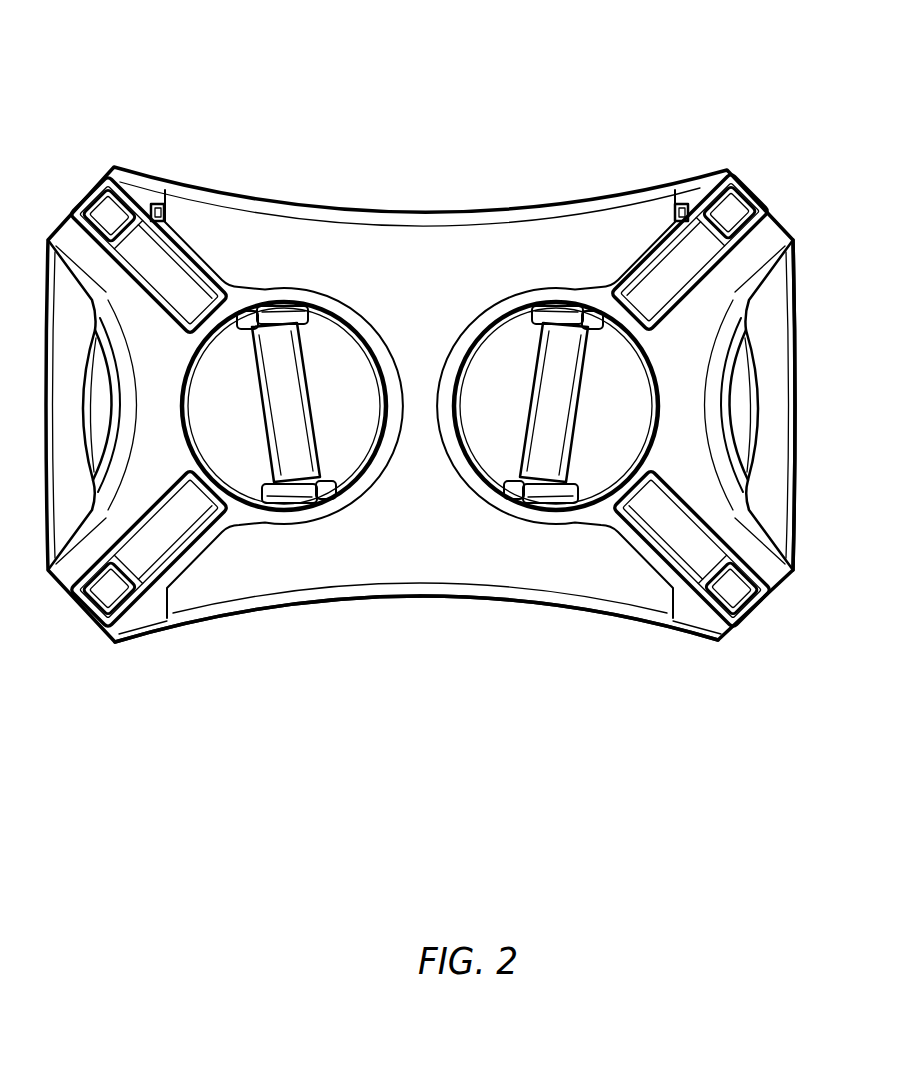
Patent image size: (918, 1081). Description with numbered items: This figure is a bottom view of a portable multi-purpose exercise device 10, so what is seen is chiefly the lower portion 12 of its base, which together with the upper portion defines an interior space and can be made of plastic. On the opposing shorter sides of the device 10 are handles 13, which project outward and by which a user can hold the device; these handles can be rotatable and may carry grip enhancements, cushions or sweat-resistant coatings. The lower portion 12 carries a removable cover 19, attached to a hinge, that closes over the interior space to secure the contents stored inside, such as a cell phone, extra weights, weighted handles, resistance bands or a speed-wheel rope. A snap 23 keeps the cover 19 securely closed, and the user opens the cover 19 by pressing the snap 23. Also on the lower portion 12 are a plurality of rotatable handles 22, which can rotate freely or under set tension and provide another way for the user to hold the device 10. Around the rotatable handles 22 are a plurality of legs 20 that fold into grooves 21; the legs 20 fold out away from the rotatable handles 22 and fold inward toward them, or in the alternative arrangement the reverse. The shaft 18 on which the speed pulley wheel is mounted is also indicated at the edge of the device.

The multi-purpose exercise device 10 is at (392, 65).
The lower portion 12 is at (711, 642).
The handles 13 is at (795, 389).
The shaft 18 is at (421, 598).
The removable cover 19 is at (537, 206).
The legs 20 is at (730, 172).
The grooves 21 is at (690, 205).
The rotatable handles 22 is at (258, 324).
The snap 23 is at (160, 202).